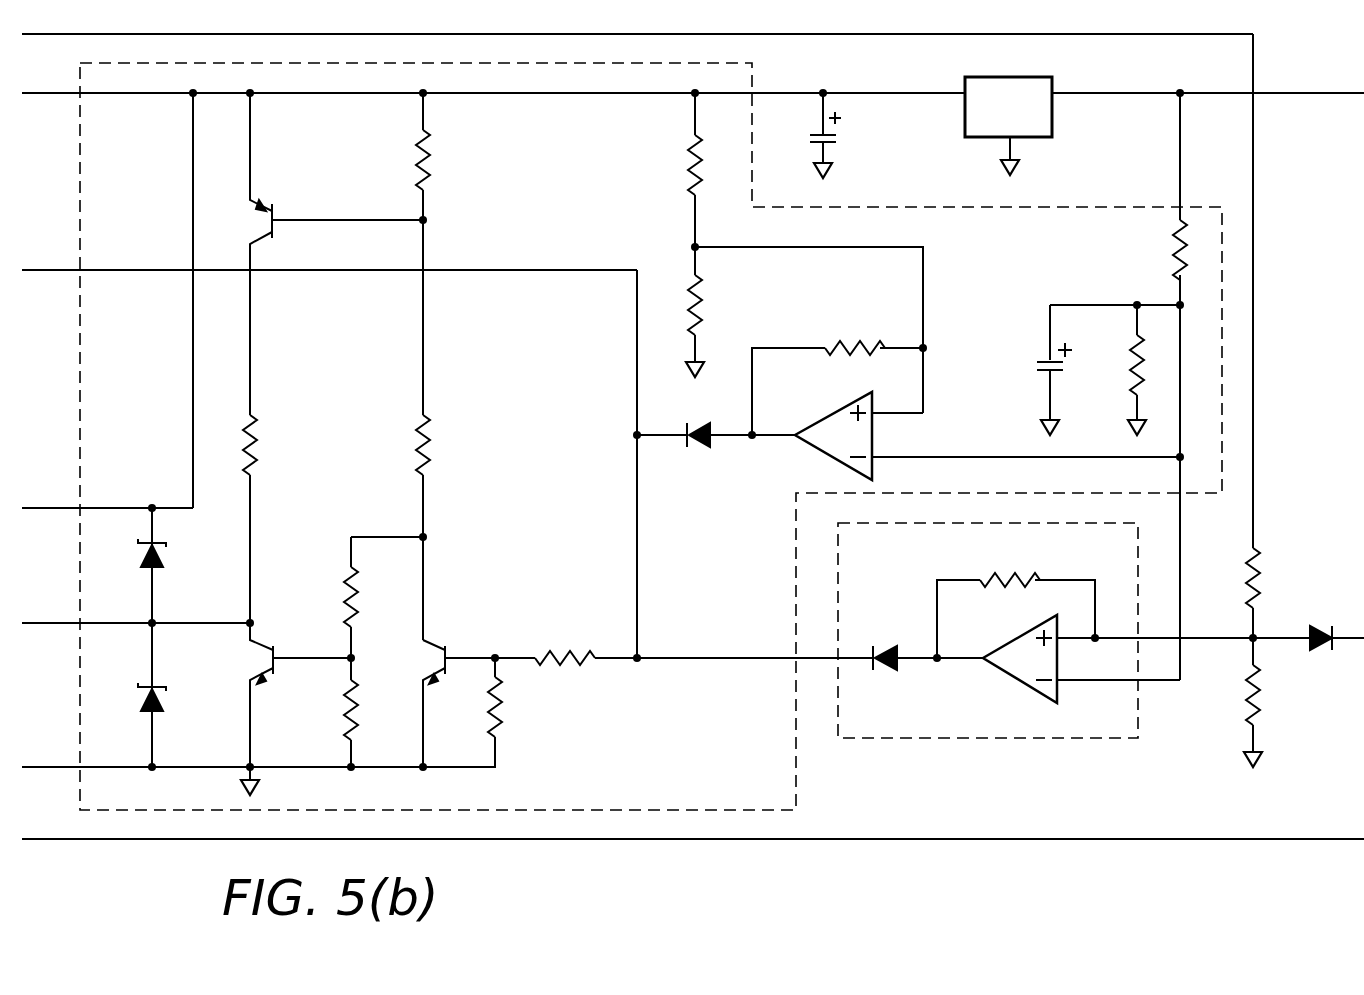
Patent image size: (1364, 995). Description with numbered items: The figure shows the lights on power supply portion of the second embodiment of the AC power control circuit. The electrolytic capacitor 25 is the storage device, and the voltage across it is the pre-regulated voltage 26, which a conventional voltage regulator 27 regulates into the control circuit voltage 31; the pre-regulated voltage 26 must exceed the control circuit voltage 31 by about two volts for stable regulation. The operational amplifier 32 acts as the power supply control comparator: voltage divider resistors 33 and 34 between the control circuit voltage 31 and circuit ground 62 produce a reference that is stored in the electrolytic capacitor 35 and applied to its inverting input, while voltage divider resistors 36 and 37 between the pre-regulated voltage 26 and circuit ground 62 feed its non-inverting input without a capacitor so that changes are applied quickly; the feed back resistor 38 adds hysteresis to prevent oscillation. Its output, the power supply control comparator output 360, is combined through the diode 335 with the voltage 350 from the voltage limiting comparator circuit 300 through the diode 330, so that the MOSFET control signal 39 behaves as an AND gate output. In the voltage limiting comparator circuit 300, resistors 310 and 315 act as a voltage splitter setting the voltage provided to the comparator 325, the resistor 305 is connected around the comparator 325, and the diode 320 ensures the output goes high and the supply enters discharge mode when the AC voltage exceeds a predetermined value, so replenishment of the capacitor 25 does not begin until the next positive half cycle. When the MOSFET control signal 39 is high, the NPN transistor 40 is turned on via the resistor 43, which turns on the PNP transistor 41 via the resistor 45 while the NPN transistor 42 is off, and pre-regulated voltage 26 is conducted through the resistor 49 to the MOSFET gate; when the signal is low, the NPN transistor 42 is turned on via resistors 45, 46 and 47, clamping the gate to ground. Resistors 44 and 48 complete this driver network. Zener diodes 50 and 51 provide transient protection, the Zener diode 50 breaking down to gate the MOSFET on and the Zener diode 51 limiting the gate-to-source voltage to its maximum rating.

The electrolytic capacitor 25 is at (836, 142).
The pre-regulated voltage 26 is at (778, 92).
The voltage regulator 27 is at (1052, 118).
The control circuit voltage 31 is at (1315, 92).
The operational amplifier 32 is at (812, 456).
The voltage divider resistor 33 is at (1178, 250).
The voltage divider resistor 34 is at (1135, 372).
The electrolytic capacitor 35 is at (1040, 372).
The voltage divider resistor 36 is at (693, 162).
The voltage divider resistor 37 is at (703, 310).
The feed back resistor 38 is at (853, 346).
The MOSFET control signal 39 is at (637, 565).
The NPN transistor 40 is at (448, 660).
The PNP transistor 41 is at (276, 235).
The NPN transistor 42 is at (275, 660).
The resistor 43 is at (570, 655).
The resistor 44 is at (498, 710).
The resistor 45 is at (428, 460).
The resistor 46 is at (428, 172).
The resistor 47 is at (348, 600).
The resistor 48 is at (348, 700).
The resistor 49 is at (255, 465).
The Zener diode 50 is at (160, 558).
The Zener diode 51 is at (148, 705).
The circuit ground 62 is at (205, 767).
The voltage limiting comparator circuit 300 is at (906, 556).
The resistor 305 is at (1015, 578).
The resistor 310 is at (1256, 560).
The resistor 315 is at (1256, 720).
The diode 320 is at (1318, 630).
The comparator 325 is at (997, 680).
The diode 330 is at (880, 668).
The diode 335 is at (690, 450).
The voltage 350 is at (958, 578).
The power supply control comparator output 360 is at (790, 348).